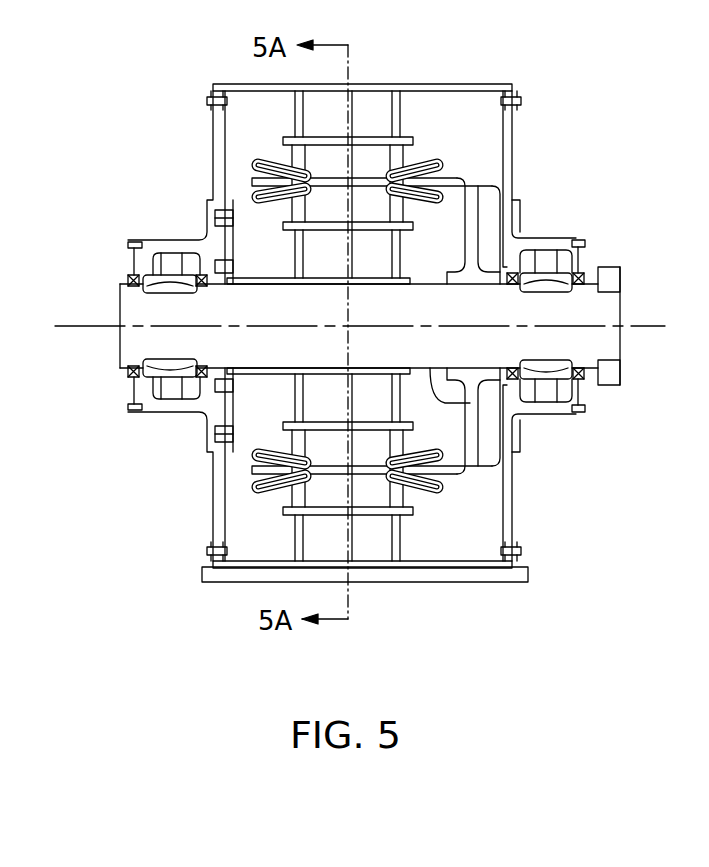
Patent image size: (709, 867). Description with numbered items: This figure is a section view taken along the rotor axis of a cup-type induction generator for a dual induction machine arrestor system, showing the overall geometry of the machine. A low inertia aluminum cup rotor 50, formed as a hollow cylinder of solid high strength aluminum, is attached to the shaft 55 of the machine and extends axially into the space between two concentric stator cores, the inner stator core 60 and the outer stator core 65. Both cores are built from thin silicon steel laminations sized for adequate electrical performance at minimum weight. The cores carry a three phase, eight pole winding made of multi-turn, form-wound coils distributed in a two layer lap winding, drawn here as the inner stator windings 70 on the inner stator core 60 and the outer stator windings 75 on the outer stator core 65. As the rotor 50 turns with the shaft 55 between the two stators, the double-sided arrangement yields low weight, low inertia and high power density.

The aluminum cup rotor 50 is at (252, 183).
The shaft 55 is at (430, 380).
The inner stator core 60 is at (372, 217).
The outer stator core 65 is at (362, 157).
The inner stator windings 70 is at (425, 210).
The outer stator windings 75 is at (440, 160).